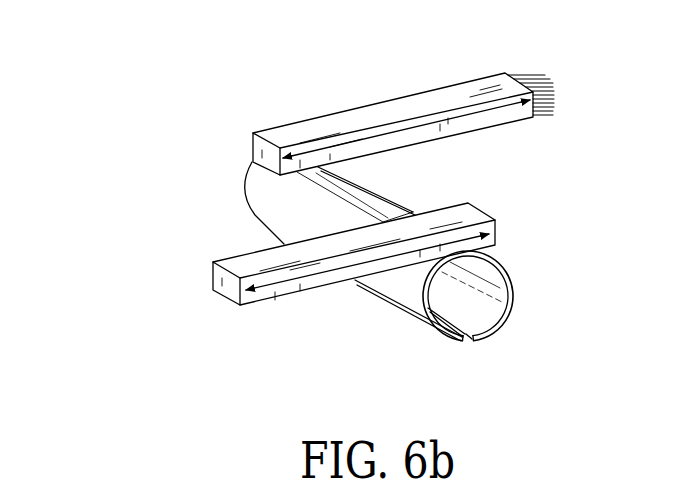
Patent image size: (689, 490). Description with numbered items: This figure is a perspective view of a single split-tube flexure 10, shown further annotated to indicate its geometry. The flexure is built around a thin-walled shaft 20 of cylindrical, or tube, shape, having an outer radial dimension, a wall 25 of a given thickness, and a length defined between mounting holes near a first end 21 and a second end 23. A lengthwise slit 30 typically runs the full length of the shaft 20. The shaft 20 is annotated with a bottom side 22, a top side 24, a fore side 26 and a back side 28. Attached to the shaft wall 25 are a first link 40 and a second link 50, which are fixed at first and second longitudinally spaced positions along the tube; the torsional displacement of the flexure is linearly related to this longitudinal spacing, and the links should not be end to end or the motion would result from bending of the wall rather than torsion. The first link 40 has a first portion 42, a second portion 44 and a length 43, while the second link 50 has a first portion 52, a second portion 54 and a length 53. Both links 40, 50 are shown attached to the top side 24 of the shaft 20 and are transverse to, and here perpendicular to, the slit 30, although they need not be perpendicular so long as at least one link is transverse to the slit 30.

The split-tube flexure 10 is at (135, 75).
The thin-walled shaft 20 is at (517, 321).
The first end 21 is at (243, 200).
The bottom side 22 is at (451, 345).
The second end 23 is at (499, 259).
The top side 24 is at (365, 186).
The wall 25 is at (513, 288).
The fore side 26 is at (385, 285).
The back side 28 is at (424, 204).
The slit 30 is at (469, 346).
The first link 40 is at (249, 150).
The first portion 42 is at (308, 127).
The length 43 is at (453, 120).
The second portion 44 is at (477, 83).
The second link 50 is at (214, 300).
The first portion 52 is at (468, 215).
The length 53 is at (295, 290).
The second portion 54 is at (242, 258).